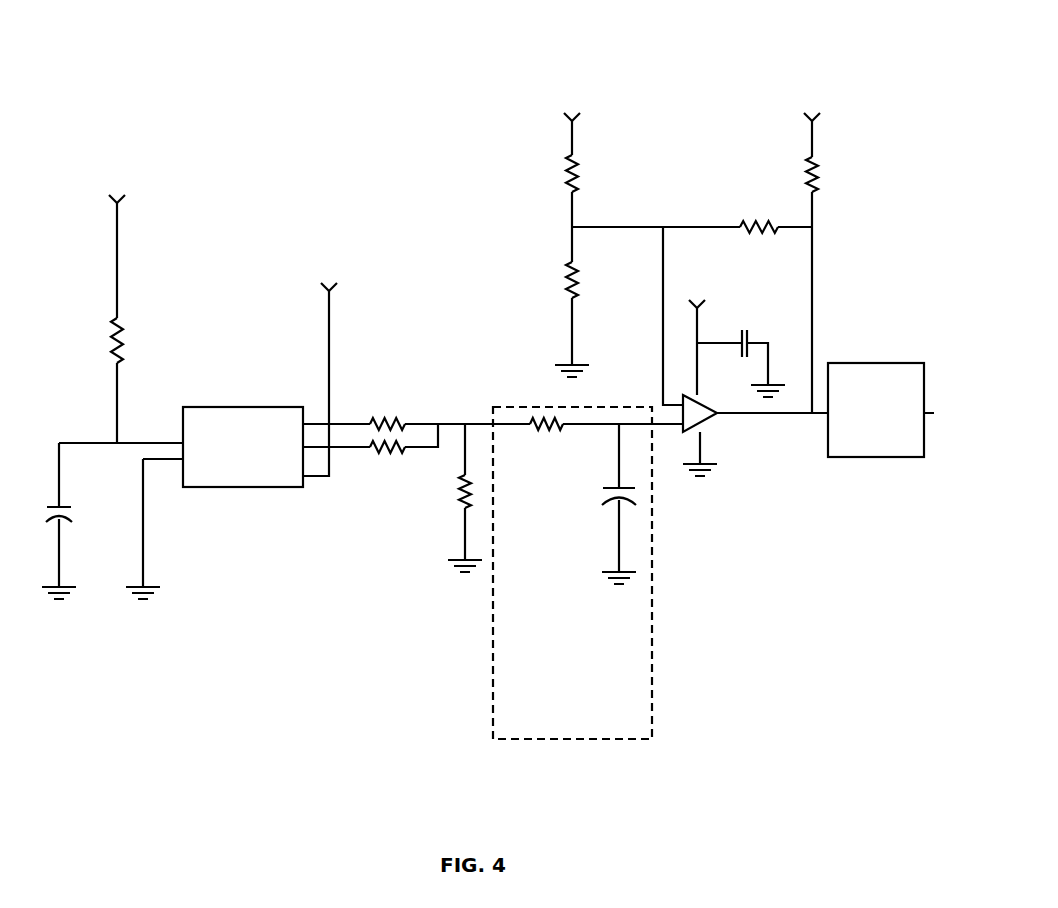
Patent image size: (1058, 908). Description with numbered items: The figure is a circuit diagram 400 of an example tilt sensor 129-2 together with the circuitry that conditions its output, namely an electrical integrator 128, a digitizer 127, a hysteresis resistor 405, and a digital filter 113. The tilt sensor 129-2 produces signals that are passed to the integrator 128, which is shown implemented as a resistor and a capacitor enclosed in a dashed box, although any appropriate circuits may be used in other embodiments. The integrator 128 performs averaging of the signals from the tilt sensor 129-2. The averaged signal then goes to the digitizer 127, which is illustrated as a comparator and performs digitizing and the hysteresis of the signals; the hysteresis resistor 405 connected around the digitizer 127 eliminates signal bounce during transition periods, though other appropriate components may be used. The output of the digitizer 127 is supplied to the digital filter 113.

The circuit diagram 400 is at (468, 110).
The tilt sensor 129-2 is at (247, 487).
The hysteresis resistor 405 is at (768, 221).
The electrical integrator 128 is at (572, 740).
The digitizer 127 is at (715, 413).
The digital filter 113 is at (872, 457).